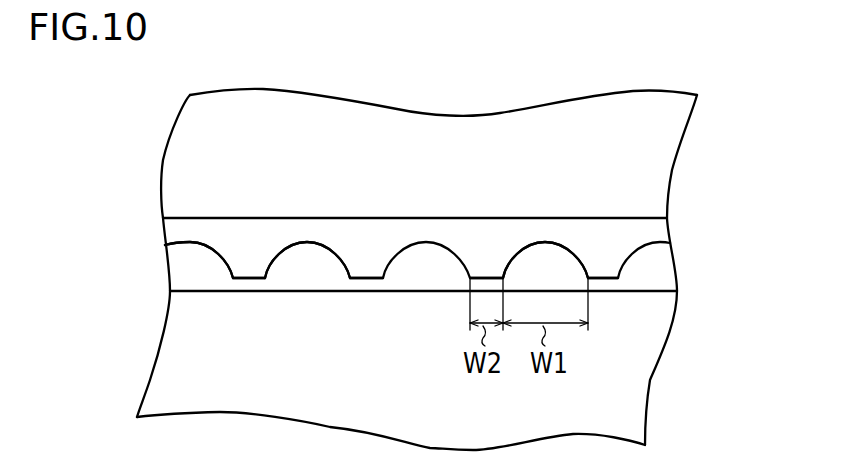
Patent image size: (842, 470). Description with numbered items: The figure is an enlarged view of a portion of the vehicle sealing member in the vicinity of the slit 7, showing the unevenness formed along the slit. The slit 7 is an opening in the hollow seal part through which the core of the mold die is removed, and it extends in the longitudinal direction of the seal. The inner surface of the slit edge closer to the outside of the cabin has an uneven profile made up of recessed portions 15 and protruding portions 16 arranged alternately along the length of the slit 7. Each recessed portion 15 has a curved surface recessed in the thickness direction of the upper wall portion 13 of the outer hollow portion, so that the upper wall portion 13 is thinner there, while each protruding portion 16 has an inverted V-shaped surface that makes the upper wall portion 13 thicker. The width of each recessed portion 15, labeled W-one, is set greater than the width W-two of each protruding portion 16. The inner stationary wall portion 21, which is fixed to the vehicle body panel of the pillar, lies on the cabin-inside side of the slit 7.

The slit 7 is at (323, 289).
The upper wall portion 13 is at (652, 143).
The recessed portion 15 is at (187, 243).
The protruding portion 16 is at (248, 279).
The inner stationary wall portion 21 is at (633, 348).